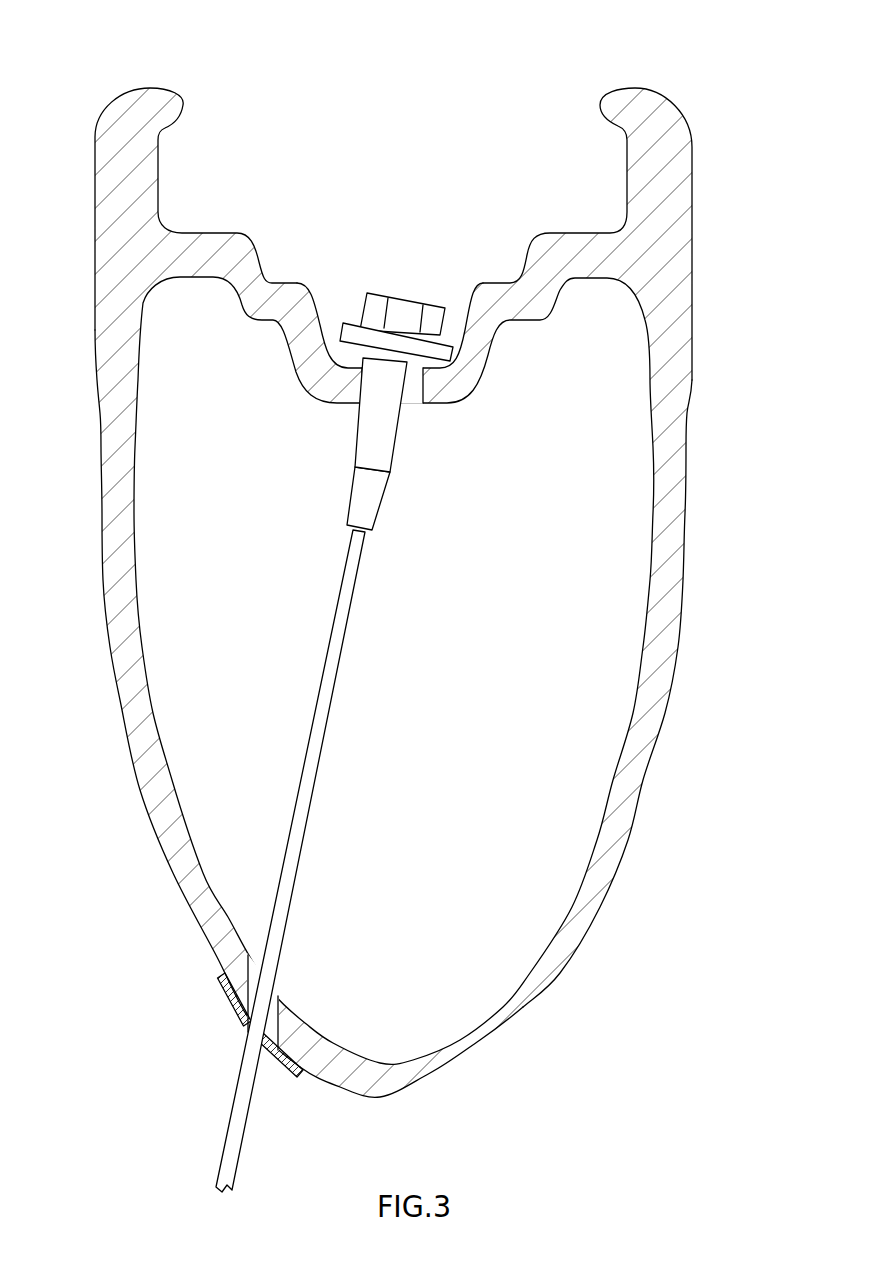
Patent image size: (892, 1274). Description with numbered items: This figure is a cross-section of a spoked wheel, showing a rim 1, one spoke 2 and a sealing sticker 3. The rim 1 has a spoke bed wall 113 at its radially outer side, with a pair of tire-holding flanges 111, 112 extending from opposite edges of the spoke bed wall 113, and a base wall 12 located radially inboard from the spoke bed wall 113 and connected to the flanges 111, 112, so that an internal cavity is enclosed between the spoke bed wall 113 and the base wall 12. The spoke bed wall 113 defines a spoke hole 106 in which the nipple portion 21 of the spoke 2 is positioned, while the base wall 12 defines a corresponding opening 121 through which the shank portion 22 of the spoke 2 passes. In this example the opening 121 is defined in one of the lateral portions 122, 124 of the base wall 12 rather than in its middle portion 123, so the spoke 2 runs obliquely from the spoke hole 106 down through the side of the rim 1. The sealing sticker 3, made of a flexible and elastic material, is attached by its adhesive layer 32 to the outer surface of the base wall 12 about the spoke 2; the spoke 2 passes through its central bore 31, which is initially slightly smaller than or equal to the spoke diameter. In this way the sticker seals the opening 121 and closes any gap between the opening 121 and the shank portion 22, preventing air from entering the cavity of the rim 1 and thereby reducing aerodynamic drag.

The rim 1 is at (702, 95).
The tire-holding flange 111 is at (142, 184).
The tire-holding flange 112 is at (682, 188).
The spoke bed wall 113 is at (340, 387).
The spoke hole 106 is at (415, 393).
The base wall 12 is at (607, 971).
The opening 121 is at (275, 990).
The lateral portion 122 is at (665, 668).
The middle portion 123 is at (477, 1058).
The lateral portion 124 is at (142, 755).
The spoke 2 is at (333, 689).
The nipple portion 21 is at (397, 308).
The shank portion 22 is at (243, 1092).
The sealing sticker 3 is at (209, 1066).
The central bore 31 is at (255, 1025).
The adhesive layer 32 is at (308, 1076).